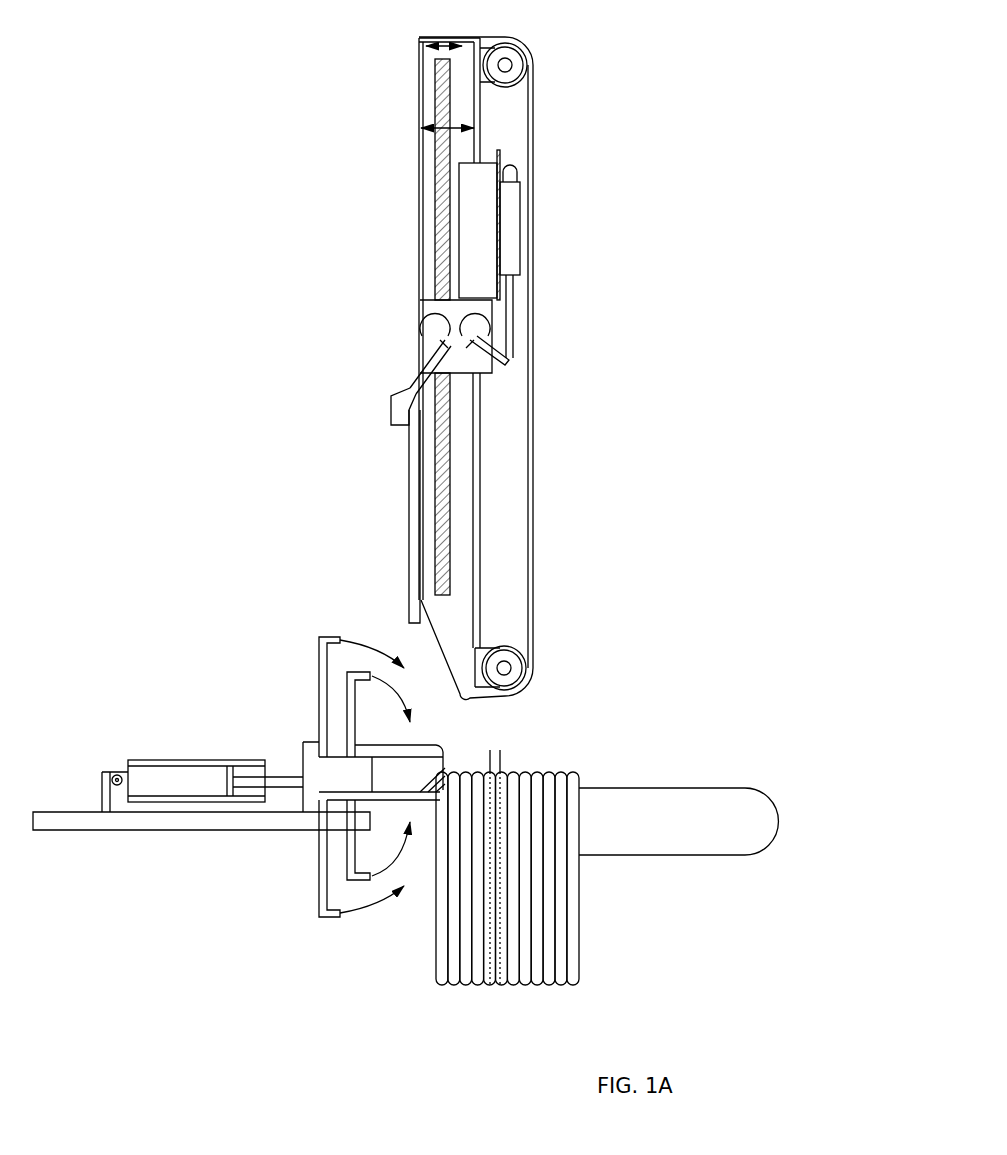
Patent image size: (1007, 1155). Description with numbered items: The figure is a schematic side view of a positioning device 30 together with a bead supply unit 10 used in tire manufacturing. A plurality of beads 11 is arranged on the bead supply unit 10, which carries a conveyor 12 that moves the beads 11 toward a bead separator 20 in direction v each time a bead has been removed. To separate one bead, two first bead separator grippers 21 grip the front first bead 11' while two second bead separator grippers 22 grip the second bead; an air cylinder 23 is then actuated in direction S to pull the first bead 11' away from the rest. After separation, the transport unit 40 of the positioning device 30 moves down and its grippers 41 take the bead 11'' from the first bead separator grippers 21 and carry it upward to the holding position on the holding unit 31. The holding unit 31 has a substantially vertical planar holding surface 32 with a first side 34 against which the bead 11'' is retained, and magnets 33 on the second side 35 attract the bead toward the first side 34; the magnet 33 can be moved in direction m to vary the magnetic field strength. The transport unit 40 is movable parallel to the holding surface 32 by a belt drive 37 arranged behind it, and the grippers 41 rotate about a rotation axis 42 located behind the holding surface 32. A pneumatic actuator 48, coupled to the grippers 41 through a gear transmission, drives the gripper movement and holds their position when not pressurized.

The bead supply unit 10 is at (618, 881).
The bead 11 is at (470, 897).
The first bead 11' is at (467, 878).
The retained bead 11'' is at (379, 516).
The conveyor 12 is at (695, 788).
The bead separator 20 is at (223, 739).
The first bead separator grippers 21 is at (347, 708).
The second bead separator grippers 22 is at (319, 668).
The air cylinder 23 is at (165, 760).
The positioning device 30 is at (314, 183).
The holding unit 31 is at (421, 88).
The holding surface 32 is at (419, 184).
The magnet 33 is at (425, 45).
The first side 34 is at (417, 222).
The second side 35 is at (476, 128).
The belt drive 37 is at (535, 553).
The transport unit 40 is at (495, 372).
The grippers 41 is at (392, 400).
The rotation axis 42 is at (432, 330).
The pneumatic actuator 48 is at (511, 213).